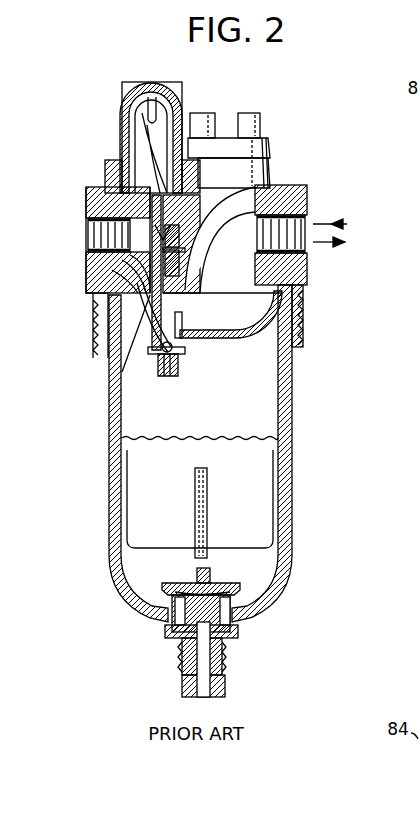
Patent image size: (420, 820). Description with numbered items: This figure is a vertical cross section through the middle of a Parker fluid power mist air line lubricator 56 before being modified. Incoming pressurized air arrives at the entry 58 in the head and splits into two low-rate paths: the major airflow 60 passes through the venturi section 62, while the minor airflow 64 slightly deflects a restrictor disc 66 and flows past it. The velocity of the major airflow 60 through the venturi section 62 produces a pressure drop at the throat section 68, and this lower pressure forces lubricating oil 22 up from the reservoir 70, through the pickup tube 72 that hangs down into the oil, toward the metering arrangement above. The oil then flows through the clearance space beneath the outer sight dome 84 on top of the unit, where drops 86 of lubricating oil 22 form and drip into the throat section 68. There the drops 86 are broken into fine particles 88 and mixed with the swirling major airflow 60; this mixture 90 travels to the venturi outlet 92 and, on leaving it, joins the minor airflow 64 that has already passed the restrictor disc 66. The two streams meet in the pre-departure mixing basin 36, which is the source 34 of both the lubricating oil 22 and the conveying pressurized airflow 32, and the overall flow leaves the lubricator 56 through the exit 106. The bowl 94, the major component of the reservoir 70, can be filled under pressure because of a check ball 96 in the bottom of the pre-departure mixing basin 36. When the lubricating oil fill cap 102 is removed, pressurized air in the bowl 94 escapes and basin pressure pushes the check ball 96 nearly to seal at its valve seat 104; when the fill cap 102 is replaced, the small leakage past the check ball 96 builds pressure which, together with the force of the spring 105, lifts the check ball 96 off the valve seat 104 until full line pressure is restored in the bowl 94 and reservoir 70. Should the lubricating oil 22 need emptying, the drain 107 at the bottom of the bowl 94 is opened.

The lubricating oil 22 is at (347, 224).
The pressurized airflow 32 is at (325, 242).
The source 34 is at (222, 321).
The pre-departure mixing basin 36 is at (250, 338).
The air line lubricator 56 is at (272, 160).
The entry 58 is at (88, 218).
The major airflow 60 is at (125, 237).
The venturi section 62 is at (140, 175).
The minor airflow 64 is at (150, 278).
The restrictor disc 66 is at (150, 298).
The throat section 68 is at (140, 265).
The reservoir 70 is at (266, 502).
The pickup tube 72 is at (207, 535).
The outer sight dome 84 is at (126, 100).
The drops 86 is at (136, 135).
The fine particles 88 is at (234, 164).
The mixture 90 is at (192, 248).
The venturi outlet 92 is at (205, 269).
The bowl 94 is at (110, 512).
The check ball 96 is at (122, 372).
The lubricating oil fill cap 102 is at (250, 113).
The valve seat 104 is at (165, 355).
The spring 105 is at (176, 368).
The exit 106 is at (308, 212).
The drain 107 is at (226, 676).